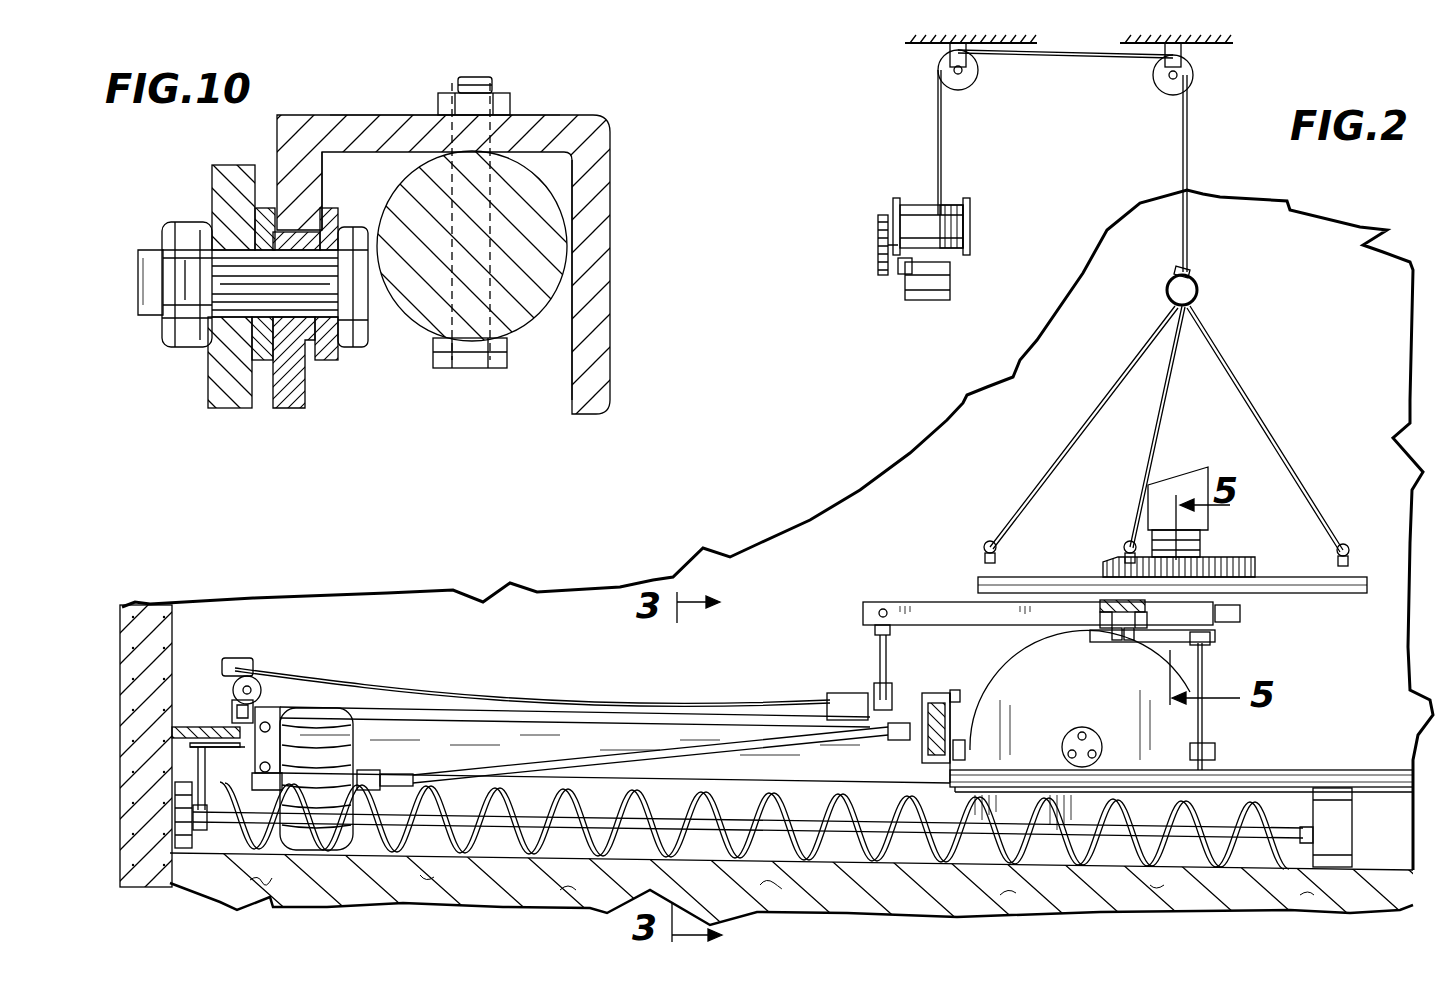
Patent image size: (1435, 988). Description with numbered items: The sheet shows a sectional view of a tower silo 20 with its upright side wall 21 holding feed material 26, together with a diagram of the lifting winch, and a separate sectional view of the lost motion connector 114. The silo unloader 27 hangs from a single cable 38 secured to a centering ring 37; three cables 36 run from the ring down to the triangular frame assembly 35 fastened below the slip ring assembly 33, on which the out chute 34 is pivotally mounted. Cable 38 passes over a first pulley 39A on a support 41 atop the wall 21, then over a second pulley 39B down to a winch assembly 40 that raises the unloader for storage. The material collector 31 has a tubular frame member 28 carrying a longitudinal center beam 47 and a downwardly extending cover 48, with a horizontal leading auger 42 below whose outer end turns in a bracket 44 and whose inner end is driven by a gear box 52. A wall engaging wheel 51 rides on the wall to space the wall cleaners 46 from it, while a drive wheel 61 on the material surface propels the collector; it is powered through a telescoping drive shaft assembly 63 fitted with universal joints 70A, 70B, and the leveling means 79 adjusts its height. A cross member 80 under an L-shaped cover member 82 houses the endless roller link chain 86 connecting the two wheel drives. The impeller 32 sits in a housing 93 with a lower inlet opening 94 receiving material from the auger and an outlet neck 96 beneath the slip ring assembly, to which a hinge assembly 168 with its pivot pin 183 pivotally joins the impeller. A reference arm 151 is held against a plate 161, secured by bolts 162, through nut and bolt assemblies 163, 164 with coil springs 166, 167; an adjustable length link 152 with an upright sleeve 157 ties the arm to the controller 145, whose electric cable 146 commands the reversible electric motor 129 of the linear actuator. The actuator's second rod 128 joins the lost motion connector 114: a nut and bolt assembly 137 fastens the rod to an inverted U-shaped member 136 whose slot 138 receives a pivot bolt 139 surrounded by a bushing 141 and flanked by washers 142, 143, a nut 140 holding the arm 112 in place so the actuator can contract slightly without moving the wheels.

In FIG. 2, the tower silo 20 is at (155, 745).
In FIG. 2, the side wall 21 is at (165, 650).
In FIG. 2, the feed material 26 is at (802, 887).
In FIG. 2, the silo unloader 27 is at (1137, 458).
In FIG. 2, the frame member 28 is at (1320, 768).
In FIG. 2, the material collector 31 is at (592, 701).
In FIG. 2, the impeller 32 is at (1198, 752).
In FIG. 2, the slip ring assembly 33 is at (1226, 560).
In FIG. 2, the out chute 34 is at (1195, 467).
In FIG. 2, the triangular frame assembly 35 is at (1325, 595).
In FIG. 2, the cables 36 is at (1105, 375).
In FIG. 2, the centering ring 37 is at (1200, 292).
In FIG. 2, the cable 38 is at (1190, 160).
In FIG. 2, the first pulley 39A is at (1158, 88).
In FIG. 2, the second pulley 39B is at (978, 85).
In FIG. 2, the winch assembly 40 is at (952, 207).
In FIG. 2, the support 41 is at (1215, 45).
In FIG. 2, the leading auger 42 is at (848, 822).
In FIG. 2, the bracket 44 is at (200, 772).
In FIG. 2, the wall cleaners 46 is at (178, 812).
In FIG. 2, the center beam 47 is at (555, 710).
In FIG. 2, the cover 48 is at (615, 738).
In FIG. 2, the wall engaging wheel 51 is at (190, 725).
In FIG. 2, the gear box 52 is at (1355, 830).
In FIG. 2, the drive wheel 61 is at (355, 752).
In FIG. 2, the drive shaft assembly 63 is at (650, 755).
In FIG. 2, the universal joint 70A is at (903, 722).
In FIG. 2, the universal joint 70B is at (385, 770).
In FIG. 2, the leveling means 79 is at (256, 665).
In FIG. 2, the cross member 80 is at (918, 752).
In FIG. 2, the cover member 82 is at (968, 722).
In FIG. 2, the roller link chain 86 is at (955, 690).
In FIG. 2, the housing 93 is at (1102, 737).
In FIG. 2, the inlet opening 94 is at (985, 790).
In FIG. 2, the outlet neck 96 is at (1210, 665).
In FIG. 10, the arm 112 is at (235, 410).
In FIG. 2, the arm 112 is at (255, 762).
In FIG. 10, the lost motion connector 114 is at (628, 138).
In FIG. 2, the lost motion connector 114 is at (232, 703).
In FIG. 10, the second rod 128 is at (555, 230).
In FIG. 2, the reversible electric motor 129 is at (268, 683).
In FIG. 10, the inverted U-shaped member 136 is at (383, 115).
In FIG. 10, the nut and bolt assembly 137 is at (512, 97).
In FIG. 10, the slot 138 is at (318, 375).
In FIG. 10, the pivot bolt 139 is at (352, 345).
In FIG. 10, the nut 140 is at (190, 345).
In FIG. 10, the bushing 141 is at (292, 380).
In FIG. 10, the washer 142 is at (345, 207).
In FIG. 10, the washer 143 is at (258, 165).
In FIG. 2, the controller 145 is at (845, 692).
In FIG. 2, the electric cable 146 is at (745, 695).
In FIG. 2, the reference arm 151 is at (960, 605).
In FIG. 2, the adjustable length link 152 is at (870, 634).
In FIG. 2, the sleeve 157 is at (888, 662).
In FIG. 2, the plate 161 is at (1105, 600).
In FIG. 2, the bolts 162 is at (1200, 637).
In FIG. 2, the nut and bolt assembly 163 is at (1115, 640).
In FIG. 2, the nut and bolt assembly 164 is at (1129, 640).
In FIG. 2, the coil spring 166 is at (1105, 628).
In FIG. 2, the coil spring 167 is at (1140, 628).
In FIG. 2, the hinge assembly 168 is at (1237, 613).
In FIG. 2, the pivot pin 183 is at (1207, 640).